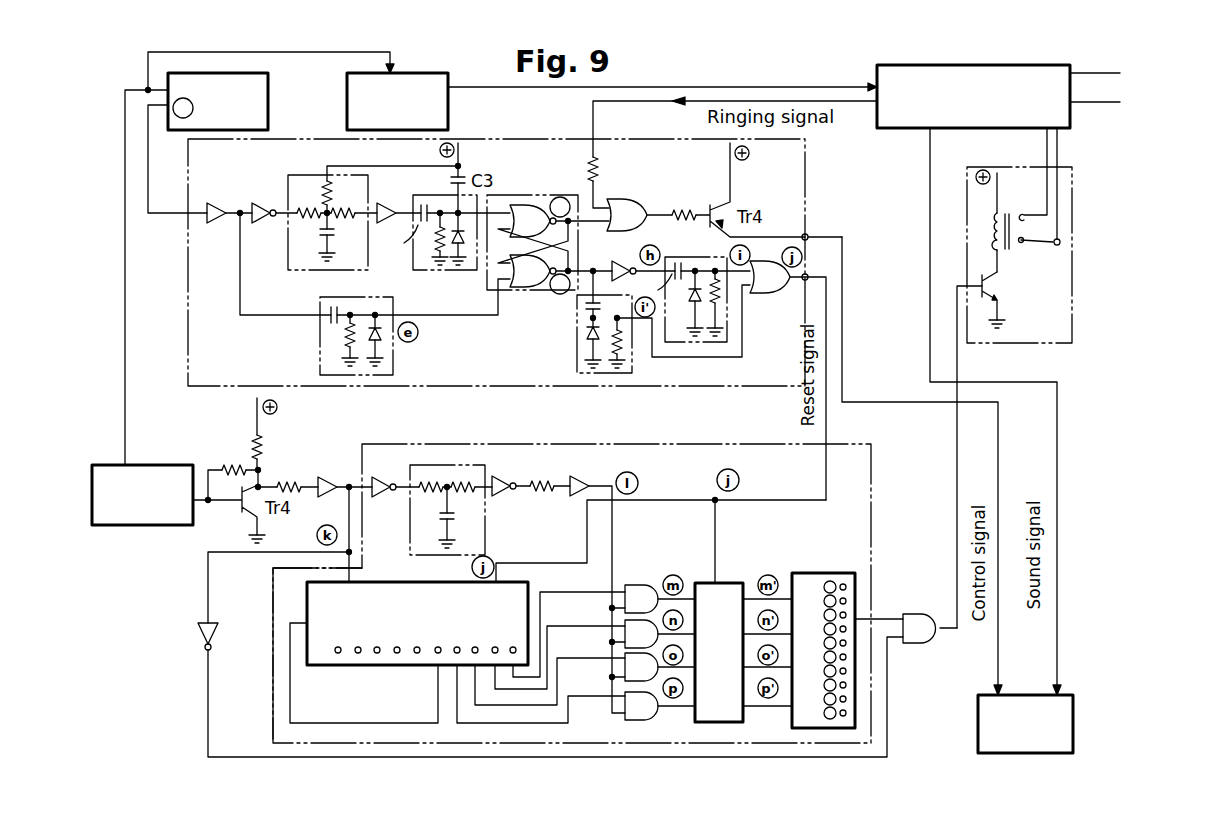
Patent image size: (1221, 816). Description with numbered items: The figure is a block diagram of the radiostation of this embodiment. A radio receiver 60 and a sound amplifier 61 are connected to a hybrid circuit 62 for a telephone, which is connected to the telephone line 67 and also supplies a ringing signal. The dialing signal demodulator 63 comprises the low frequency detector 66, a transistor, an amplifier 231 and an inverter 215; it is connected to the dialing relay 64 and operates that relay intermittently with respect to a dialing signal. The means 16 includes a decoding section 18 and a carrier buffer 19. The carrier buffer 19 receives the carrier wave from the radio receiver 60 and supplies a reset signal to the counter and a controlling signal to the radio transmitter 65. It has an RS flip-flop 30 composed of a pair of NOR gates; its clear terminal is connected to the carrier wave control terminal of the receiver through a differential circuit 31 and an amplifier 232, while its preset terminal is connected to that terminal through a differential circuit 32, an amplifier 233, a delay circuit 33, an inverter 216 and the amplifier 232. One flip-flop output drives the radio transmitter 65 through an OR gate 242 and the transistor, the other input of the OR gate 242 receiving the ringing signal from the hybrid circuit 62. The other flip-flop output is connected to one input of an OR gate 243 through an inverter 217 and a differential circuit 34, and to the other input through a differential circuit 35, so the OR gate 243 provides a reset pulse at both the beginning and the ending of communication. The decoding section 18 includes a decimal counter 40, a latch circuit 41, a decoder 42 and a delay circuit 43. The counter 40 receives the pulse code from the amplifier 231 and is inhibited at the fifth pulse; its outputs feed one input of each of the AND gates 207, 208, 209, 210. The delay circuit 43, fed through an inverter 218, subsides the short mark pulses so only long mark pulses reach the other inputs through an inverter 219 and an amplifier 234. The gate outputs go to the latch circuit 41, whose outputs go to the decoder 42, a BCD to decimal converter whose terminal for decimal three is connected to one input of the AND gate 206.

The means 16 is at (605, 443).
The decoding section 18 is at (667, 443).
The carrier buffer 19 is at (188, 333).
The RS flip-flop 30 is at (577, 195).
The differential circuit 31 is at (320, 348).
The differential circuit 32 is at (420, 270).
The delay circuit 33 is at (293, 172).
The differential circuit 34 is at (697, 257).
The differential circuit 35 is at (577, 341).
The decimal counter 40 is at (332, 665).
The latch circuit 41 is at (723, 701).
The decoder 42 is at (812, 573).
The delay circuit 43 is at (485, 531).
The radio receiver 60 is at (268, 95).
The sound amplifier 61 is at (448, 107).
The hybrid circuit 62 is at (878, 118).
The dialing signal demodulator 63 is at (204, 577).
The dialing relay 64 is at (1072, 205).
The radio transmitter 65 is at (978, 723).
The low frequency detector 66 is at (112, 525).
The telephone line 67 is at (1087, 104).
The AND gate 206 is at (920, 643).
The AND gate 207 is at (635, 585).
The AND gate 208 is at (620, 625).
The AND gate 209 is at (620, 660).
The AND gate 210 is at (630, 718).
The inverter 215 is at (200, 622).
The inverter 216 is at (265, 198).
The inverter 217 is at (614, 263).
The inverter 218 is at (384, 500).
The inverter 219 is at (503, 498).
The amplifier 231 is at (330, 477).
The amplifier 232 is at (211, 198).
The amplifier 233 is at (380, 204).
The amplifier 234 is at (582, 478).
The OR gate 242 is at (634, 200).
The OR gate 243 is at (768, 291).